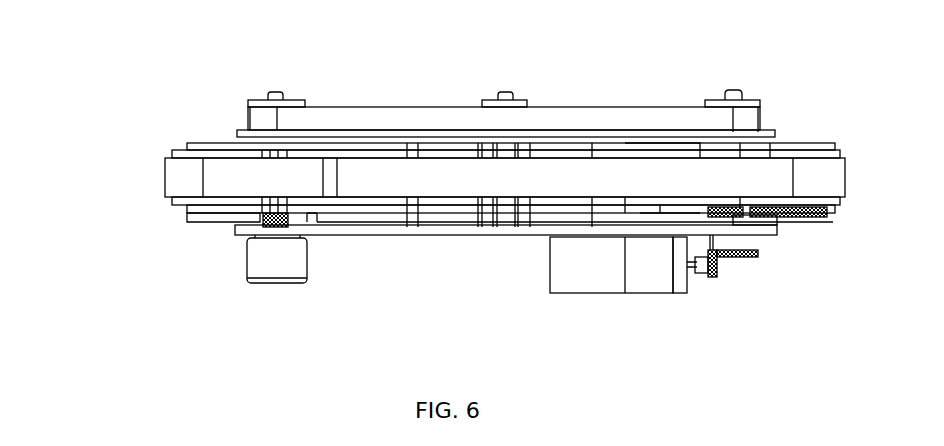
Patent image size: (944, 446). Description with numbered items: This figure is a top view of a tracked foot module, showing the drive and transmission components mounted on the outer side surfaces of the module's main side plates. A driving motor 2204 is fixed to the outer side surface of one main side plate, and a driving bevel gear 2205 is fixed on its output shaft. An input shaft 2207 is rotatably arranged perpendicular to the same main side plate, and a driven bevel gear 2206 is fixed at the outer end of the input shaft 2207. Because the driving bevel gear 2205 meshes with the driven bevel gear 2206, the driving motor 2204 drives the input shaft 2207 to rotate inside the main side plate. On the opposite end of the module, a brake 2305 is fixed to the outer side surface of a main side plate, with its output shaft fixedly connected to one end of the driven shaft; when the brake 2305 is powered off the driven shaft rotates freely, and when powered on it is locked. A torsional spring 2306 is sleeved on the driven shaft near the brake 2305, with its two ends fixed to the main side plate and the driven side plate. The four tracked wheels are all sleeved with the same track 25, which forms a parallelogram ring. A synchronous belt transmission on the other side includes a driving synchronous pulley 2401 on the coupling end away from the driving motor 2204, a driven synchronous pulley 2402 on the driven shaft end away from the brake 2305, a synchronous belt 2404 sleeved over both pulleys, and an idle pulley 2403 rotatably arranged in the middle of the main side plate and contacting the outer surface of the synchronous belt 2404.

The track 25 is at (225, 178).
The driving synchronous pulley 2401 is at (753, 102).
The driven synchronous pulley 2402 is at (258, 98).
The idle pulley 2403 is at (530, 100).
The synchronous belt 2404 is at (437, 117).
The driving motor 2204 is at (648, 275).
The driving bevel gear 2205 is at (713, 278).
The driven bevel gear 2206 is at (747, 260).
The input shaft 2207 is at (740, 225).
The brake 2305 is at (273, 265).
The torsional spring 2306 is at (262, 228).